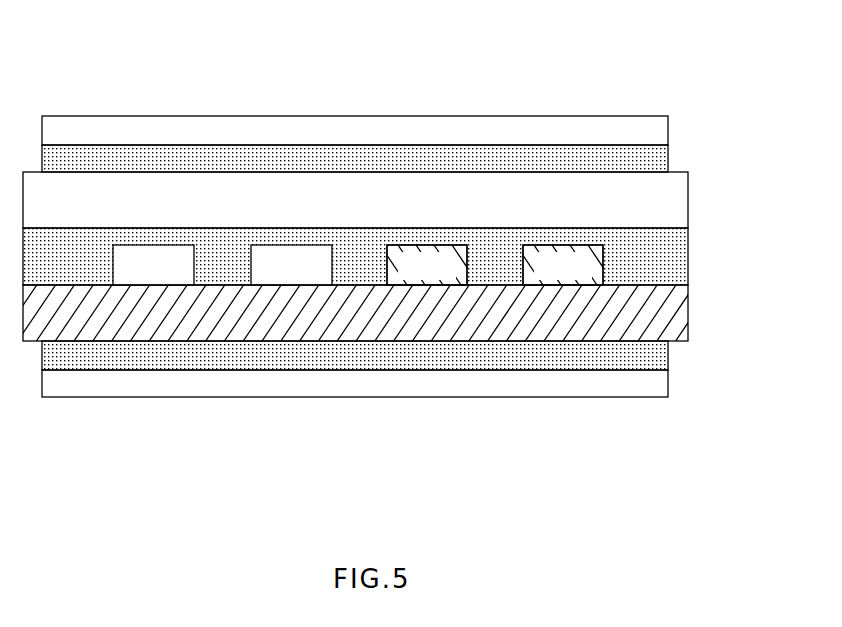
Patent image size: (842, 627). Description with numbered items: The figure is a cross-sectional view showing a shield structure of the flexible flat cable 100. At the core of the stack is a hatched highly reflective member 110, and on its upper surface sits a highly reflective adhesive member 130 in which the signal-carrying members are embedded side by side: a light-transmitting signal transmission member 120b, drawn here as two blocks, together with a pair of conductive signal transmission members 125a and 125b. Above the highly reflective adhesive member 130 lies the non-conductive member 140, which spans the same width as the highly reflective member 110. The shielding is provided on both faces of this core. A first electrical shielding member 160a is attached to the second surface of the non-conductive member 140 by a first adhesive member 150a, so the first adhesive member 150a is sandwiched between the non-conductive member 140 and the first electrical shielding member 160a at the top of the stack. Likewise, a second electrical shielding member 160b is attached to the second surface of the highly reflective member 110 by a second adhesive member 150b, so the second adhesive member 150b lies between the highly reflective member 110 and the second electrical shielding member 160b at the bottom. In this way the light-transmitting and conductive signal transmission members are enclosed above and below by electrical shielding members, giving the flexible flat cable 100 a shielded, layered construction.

The flexible flat cable 100 is at (391, 93).
The highly reflective member 110 is at (680, 311).
The light-transmitting signal transmission member 120b is at (129, 277).
The conductive signal transmission member 125a is at (403, 277).
The conductive signal transmission member 125b is at (539, 277).
The highly reflective adhesive member 130 is at (680, 255).
The non-conductive member 140 is at (680, 195).
The first adhesive member 150a is at (663, 160).
The second adhesive member 150b is at (663, 353).
The first electrical shielding member 160a is at (663, 127).
The second electrical shielding member 160b is at (663, 383).